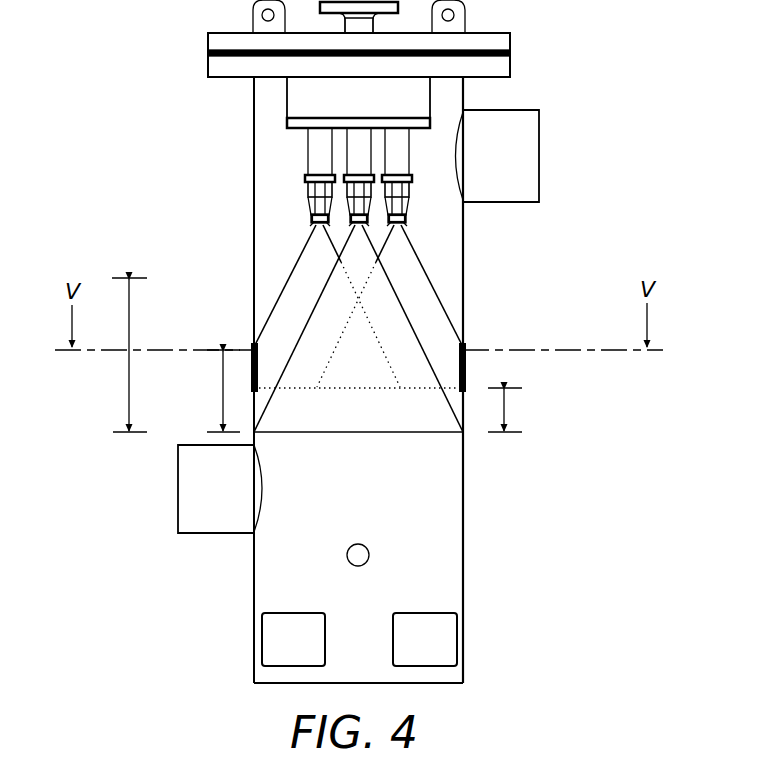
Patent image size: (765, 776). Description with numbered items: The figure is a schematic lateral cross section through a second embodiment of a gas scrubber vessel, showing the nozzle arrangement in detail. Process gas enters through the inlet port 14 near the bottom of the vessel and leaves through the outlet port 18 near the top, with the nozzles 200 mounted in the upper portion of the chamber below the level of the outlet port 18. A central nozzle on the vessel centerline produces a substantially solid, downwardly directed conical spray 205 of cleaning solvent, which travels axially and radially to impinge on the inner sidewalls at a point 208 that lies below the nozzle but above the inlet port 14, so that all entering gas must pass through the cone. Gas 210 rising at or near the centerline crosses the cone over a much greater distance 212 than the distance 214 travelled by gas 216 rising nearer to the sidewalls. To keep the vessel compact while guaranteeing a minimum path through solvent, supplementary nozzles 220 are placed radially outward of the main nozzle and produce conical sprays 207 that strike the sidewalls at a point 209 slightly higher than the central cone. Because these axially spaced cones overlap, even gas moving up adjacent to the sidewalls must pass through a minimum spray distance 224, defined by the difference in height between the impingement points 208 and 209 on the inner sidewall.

The inlet port 14 is at (177, 490).
The outlet port 18 is at (540, 157).
The spray nozzles 200 is at (306, 183).
The supplementary nozzles 220 is at (313, 210).
The conical sprays 207 is at (288, 300).
The impingement point of outer cones 209 is at (253, 347).
The conical spray 205 is at (467, 393).
The impingement point of central cone 208 is at (465, 433).
The process gas near centerline 210 is at (360, 445).
The process gas near sidewalls 216 is at (433, 445).
The distance through cone near centerline 212 is at (128, 390).
The minimum distance of spray 224 is at (222, 390).
The distance through cone near sidewalls 214 is at (507, 412).